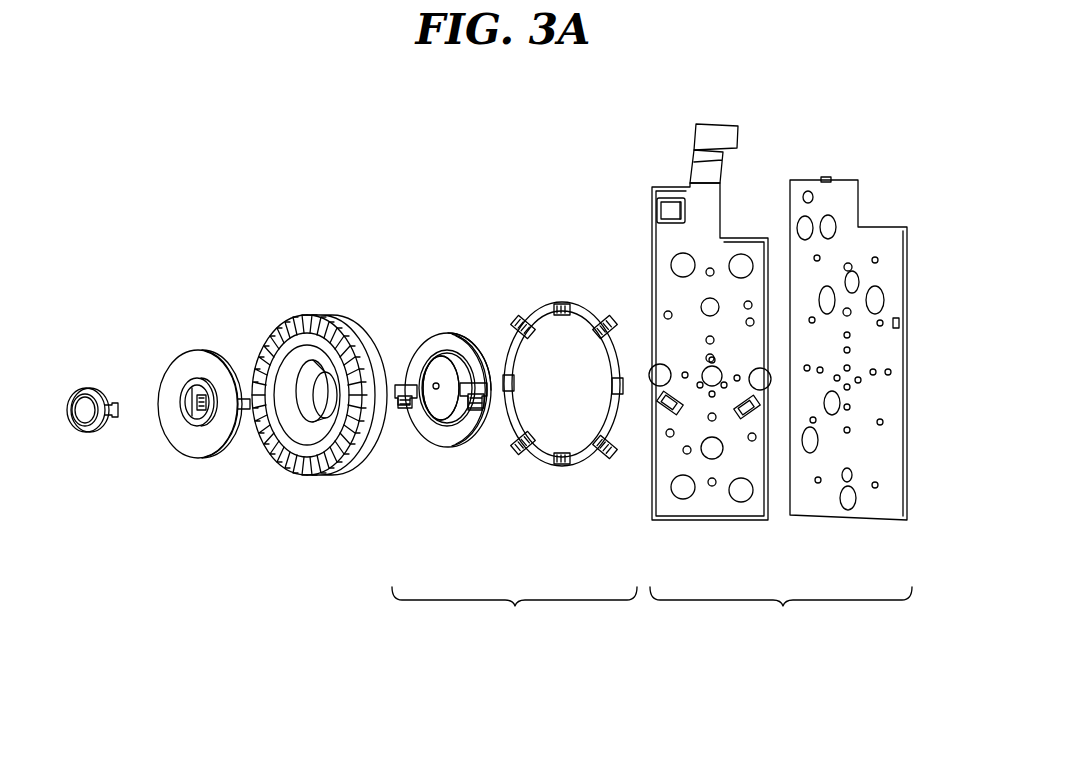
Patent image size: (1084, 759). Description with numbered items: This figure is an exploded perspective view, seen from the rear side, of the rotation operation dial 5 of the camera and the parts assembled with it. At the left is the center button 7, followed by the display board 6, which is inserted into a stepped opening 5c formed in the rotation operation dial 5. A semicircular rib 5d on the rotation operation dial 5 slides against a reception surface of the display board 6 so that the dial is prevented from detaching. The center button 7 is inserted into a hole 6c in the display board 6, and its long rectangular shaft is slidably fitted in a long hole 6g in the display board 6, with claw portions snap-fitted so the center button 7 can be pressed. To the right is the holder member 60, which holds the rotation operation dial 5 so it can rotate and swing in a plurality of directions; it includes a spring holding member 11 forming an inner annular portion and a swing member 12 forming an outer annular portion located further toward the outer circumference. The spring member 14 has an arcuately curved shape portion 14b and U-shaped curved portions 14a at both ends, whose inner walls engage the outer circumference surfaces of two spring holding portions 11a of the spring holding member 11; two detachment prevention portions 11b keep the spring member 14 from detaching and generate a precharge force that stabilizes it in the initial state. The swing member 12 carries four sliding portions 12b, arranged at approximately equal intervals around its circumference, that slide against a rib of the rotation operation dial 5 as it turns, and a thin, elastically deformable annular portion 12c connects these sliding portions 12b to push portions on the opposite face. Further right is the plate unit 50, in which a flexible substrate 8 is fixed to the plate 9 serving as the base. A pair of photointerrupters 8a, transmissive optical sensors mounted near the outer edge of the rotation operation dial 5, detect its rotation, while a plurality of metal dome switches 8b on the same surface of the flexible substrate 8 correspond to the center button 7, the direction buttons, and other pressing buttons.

The rotation operation dial 5 is at (345, 480).
The stepped opening 5c is at (292, 422).
The semicircular rib 5d is at (305, 378).
The display board 6 is at (195, 348).
The hole 6c is at (185, 398).
The long hole 6g is at (218, 427).
The center button 7 is at (88, 433).
The flexible substrate 8 is at (713, 135).
The photointerrupters 8a is at (742, 490).
The metal dome switches 8b is at (742, 262).
The plate 9 is at (833, 195).
The spring holding member 11 is at (458, 452).
The spring holding portions 11a is at (446, 372).
The detachment prevention portions 11b is at (485, 418).
The swing member 12 is at (590, 465).
The sliding portions 12b is at (590, 325).
The annular portion 12c is at (592, 452).
The spring member 14 is at (432, 345).
The curved portions 14a is at (487, 395).
The arcuately curved shape portion 14b is at (462, 338).
The plate unit 50 is at (781, 614).
The holder member 60 is at (514, 614).